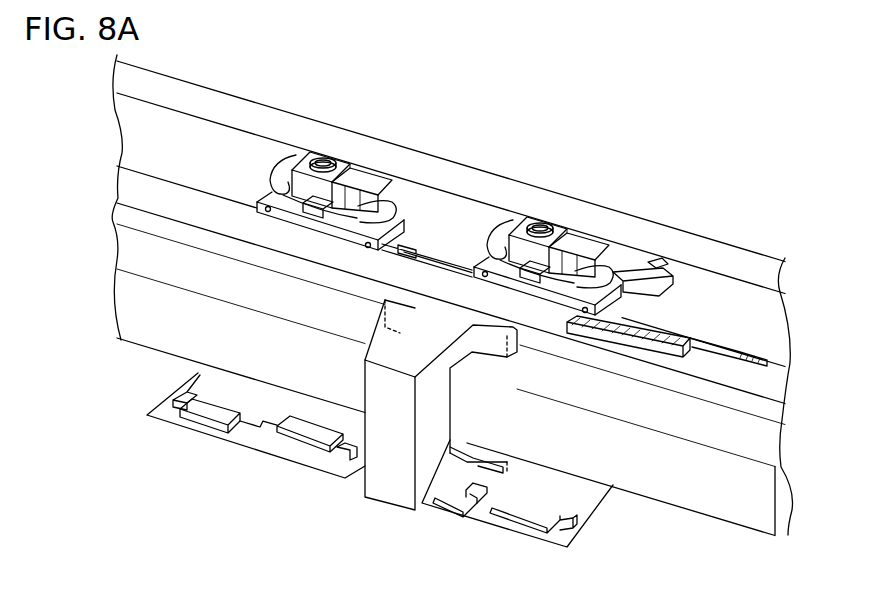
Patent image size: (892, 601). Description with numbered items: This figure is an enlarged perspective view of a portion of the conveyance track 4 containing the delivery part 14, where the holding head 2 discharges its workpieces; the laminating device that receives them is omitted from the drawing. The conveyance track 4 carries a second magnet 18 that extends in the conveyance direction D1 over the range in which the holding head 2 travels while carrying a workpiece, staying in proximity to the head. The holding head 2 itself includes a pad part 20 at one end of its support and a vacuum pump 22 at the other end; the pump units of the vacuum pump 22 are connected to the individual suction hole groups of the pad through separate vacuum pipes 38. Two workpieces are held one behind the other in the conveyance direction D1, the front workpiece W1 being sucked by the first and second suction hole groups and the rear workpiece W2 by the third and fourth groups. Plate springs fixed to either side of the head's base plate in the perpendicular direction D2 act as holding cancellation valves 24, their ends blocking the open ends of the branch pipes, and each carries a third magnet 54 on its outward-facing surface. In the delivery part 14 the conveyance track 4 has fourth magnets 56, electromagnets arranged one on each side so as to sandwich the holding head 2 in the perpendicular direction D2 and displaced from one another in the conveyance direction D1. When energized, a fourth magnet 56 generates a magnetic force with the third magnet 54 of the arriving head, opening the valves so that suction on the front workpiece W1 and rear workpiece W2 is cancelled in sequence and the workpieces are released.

The holding head 2 is at (483, 228).
The conveyance track 4 is at (776, 545).
The delivery part 14 is at (632, 525).
The second magnet 18 is at (787, 258).
The pad part 20 is at (485, 517).
The vacuum pump 22 is at (545, 262).
The holding cancellation valve 24 is at (430, 248).
The vacuum pipe 38 is at (482, 242).
The third magnet 54 is at (470, 285).
The fourth magnet 56 is at (652, 262).
The front workpiece W1 is at (587, 530).
The rear workpiece W2 is at (447, 505).
The conveyance direction D1 is at (695, 77).
The perpendicular direction D2 is at (808, 53).